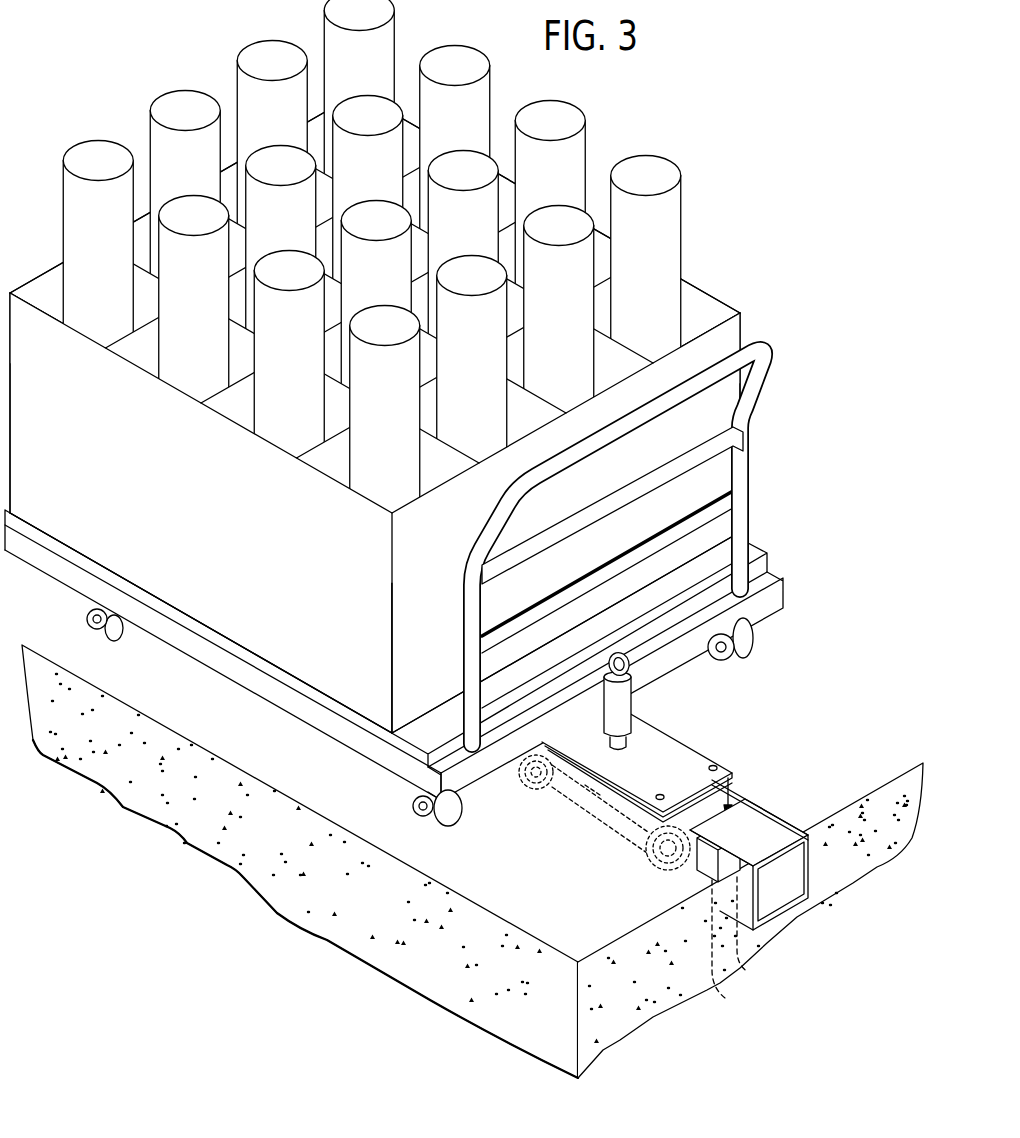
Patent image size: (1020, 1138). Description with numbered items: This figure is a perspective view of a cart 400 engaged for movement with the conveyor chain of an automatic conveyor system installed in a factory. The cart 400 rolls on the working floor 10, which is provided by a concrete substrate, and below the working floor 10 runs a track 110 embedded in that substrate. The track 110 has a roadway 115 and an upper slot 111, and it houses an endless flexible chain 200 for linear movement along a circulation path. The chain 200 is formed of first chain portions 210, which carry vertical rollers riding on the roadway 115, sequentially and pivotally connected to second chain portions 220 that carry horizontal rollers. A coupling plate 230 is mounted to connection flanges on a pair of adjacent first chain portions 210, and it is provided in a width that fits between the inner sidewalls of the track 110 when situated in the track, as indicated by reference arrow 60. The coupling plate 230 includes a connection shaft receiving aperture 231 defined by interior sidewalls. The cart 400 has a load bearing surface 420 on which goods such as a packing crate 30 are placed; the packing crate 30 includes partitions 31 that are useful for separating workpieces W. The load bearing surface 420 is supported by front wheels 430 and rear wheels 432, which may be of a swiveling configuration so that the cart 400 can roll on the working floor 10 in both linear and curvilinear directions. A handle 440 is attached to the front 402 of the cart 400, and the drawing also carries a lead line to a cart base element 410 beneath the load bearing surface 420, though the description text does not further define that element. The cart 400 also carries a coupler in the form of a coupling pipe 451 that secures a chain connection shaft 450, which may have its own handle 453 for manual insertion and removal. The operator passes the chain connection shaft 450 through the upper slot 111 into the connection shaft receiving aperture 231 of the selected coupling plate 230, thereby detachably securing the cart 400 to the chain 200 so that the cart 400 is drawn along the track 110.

The working floor 10 is at (506, 880).
The packing crate 30 is at (101, 482).
The partition 31 is at (703, 312).
The workpiece W is at (656, 173).
The reference arrow 60 is at (794, 855).
The track 110 is at (818, 862).
The upper slot 111 is at (771, 840).
The roadway 115 is at (783, 903).
The endless flexible chain 200 is at (768, 959).
The first chain portion 210 is at (748, 977).
The second chain portion 220 is at (726, 1003).
The coupling plate 230 is at (667, 748).
The connection shaft receiving aperture 231 is at (632, 758).
The cart 400 is at (423, 417).
The front of the cart 402 is at (473, 787).
The cart base 410 is at (530, 750).
The load bearing surface 420 is at (768, 572).
The front wheel 430 is at (422, 806).
The rear wheel 432 is at (93, 619).
The handle 440 is at (768, 346).
The chain connection shaft 450 is at (617, 766).
The coupling pipe 451 is at (624, 702).
The handle 453 is at (579, 663).